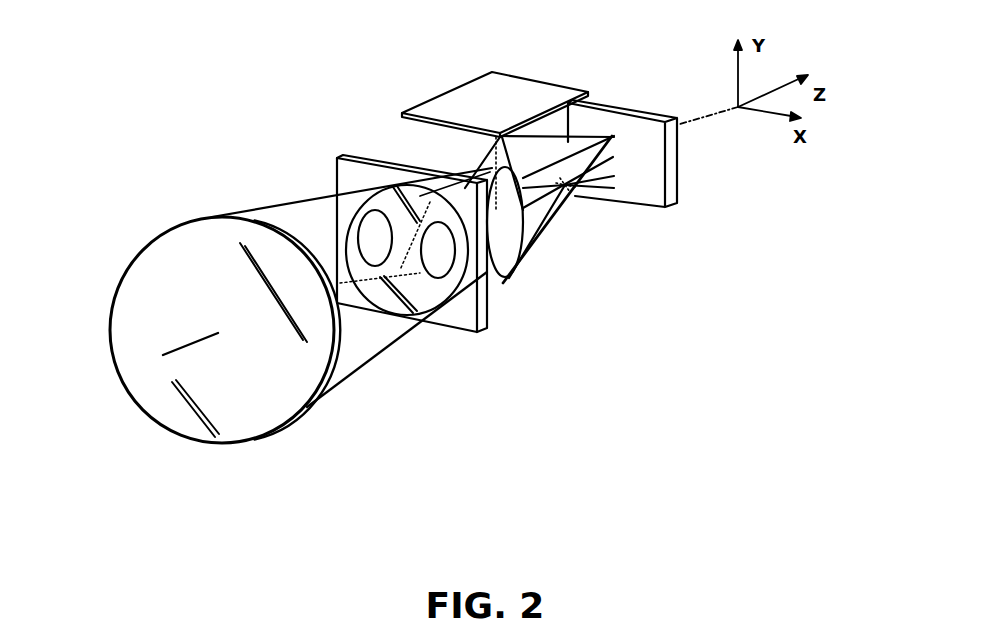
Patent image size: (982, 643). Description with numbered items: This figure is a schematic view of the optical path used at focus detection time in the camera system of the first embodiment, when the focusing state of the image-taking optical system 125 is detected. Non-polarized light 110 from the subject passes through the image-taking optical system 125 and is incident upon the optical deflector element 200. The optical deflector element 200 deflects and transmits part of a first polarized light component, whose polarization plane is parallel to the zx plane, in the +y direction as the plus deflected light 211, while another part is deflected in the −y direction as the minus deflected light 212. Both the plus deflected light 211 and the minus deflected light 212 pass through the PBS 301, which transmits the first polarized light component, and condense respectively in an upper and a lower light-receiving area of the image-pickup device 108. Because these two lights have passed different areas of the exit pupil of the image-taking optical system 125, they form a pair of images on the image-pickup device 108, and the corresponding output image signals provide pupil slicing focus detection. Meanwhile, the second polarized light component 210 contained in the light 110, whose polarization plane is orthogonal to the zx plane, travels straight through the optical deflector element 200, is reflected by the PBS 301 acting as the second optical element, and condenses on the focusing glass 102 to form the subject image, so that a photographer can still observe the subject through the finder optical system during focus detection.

The focusing glass 102 is at (528, 88).
The image-pickup device 108 is at (652, 205).
The light 110 is at (368, 358).
The image-taking optical system 125 is at (233, 447).
The optical deflector element 200 is at (458, 325).
The second polarized light component 210 is at (483, 143).
The plus deflected light 211 is at (600, 148).
The minus deflected light 212 is at (573, 192).
The PBS 301 is at (503, 280).